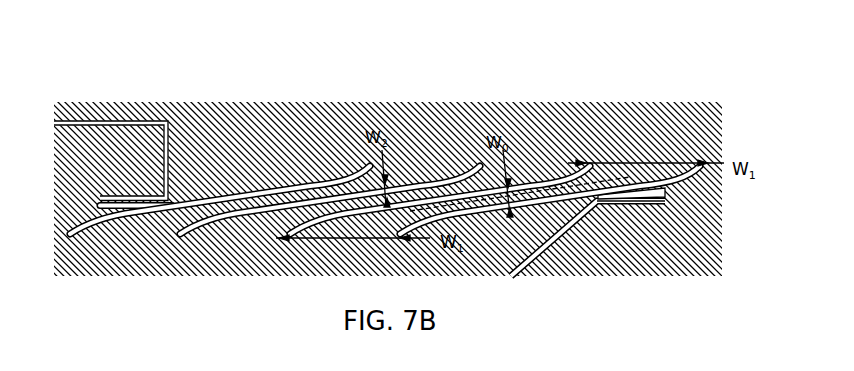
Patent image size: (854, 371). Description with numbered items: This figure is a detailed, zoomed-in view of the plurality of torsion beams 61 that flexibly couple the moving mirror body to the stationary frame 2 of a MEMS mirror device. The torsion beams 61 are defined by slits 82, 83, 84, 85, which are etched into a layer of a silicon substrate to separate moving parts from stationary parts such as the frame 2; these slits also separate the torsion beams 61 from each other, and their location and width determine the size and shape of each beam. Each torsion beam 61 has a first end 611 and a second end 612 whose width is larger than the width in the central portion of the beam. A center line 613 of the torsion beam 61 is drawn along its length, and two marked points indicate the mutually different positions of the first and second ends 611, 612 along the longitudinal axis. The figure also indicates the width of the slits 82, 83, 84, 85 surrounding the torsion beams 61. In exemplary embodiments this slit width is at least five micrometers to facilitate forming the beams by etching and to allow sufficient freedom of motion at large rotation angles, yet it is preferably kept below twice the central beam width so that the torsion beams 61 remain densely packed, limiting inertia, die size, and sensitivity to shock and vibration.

The frame 2 is at (639, 246).
The torsion beams 61 is at (419, 150).
The slit 82 is at (346, 176).
The slit 83 is at (477, 167).
The slit 84 is at (555, 183).
The slit 85 is at (675, 183).
The first end 611 is at (643, 154).
The second end 612 is at (348, 241).
The center line 613 is at (489, 208).